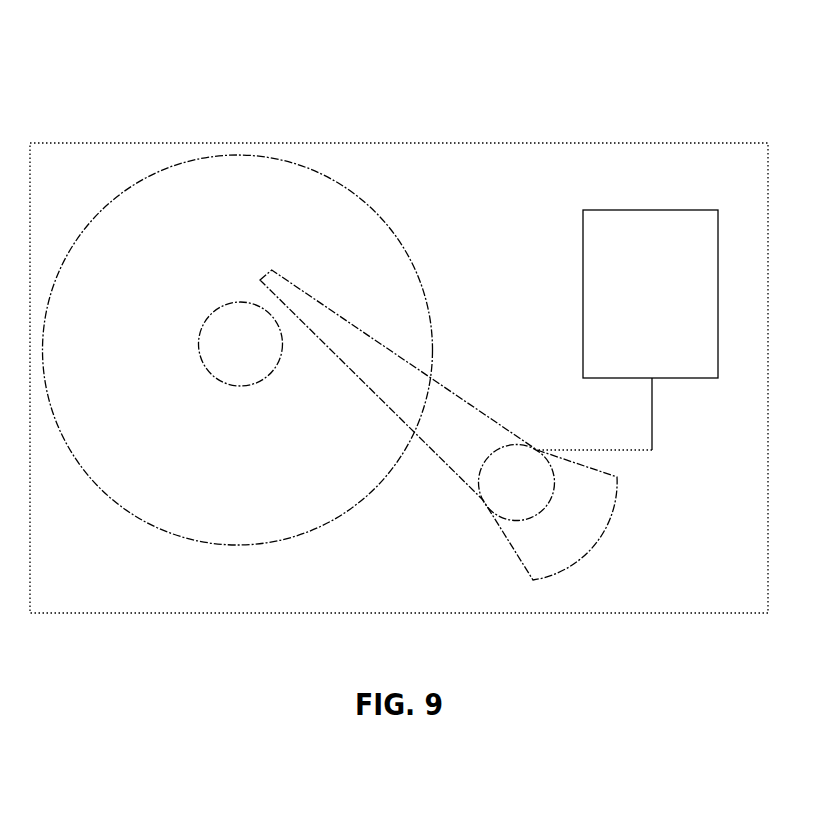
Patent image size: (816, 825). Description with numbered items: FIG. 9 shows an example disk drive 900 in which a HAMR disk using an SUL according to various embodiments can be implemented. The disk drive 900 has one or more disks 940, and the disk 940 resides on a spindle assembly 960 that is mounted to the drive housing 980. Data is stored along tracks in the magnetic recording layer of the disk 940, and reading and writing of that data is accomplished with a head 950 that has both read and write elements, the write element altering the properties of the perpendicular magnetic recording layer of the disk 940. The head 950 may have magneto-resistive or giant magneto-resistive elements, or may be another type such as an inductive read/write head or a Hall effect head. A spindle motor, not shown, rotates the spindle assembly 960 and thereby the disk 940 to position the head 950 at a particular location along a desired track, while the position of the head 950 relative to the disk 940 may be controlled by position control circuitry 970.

The disk drive 900 is at (411, 43).
The disk 940 is at (157, 529).
The head 950 is at (293, 283).
The spindle assembly 960 is at (241, 344).
The position control circuitry 970 is at (627, 330).
The drive housing 980 is at (533, 143).